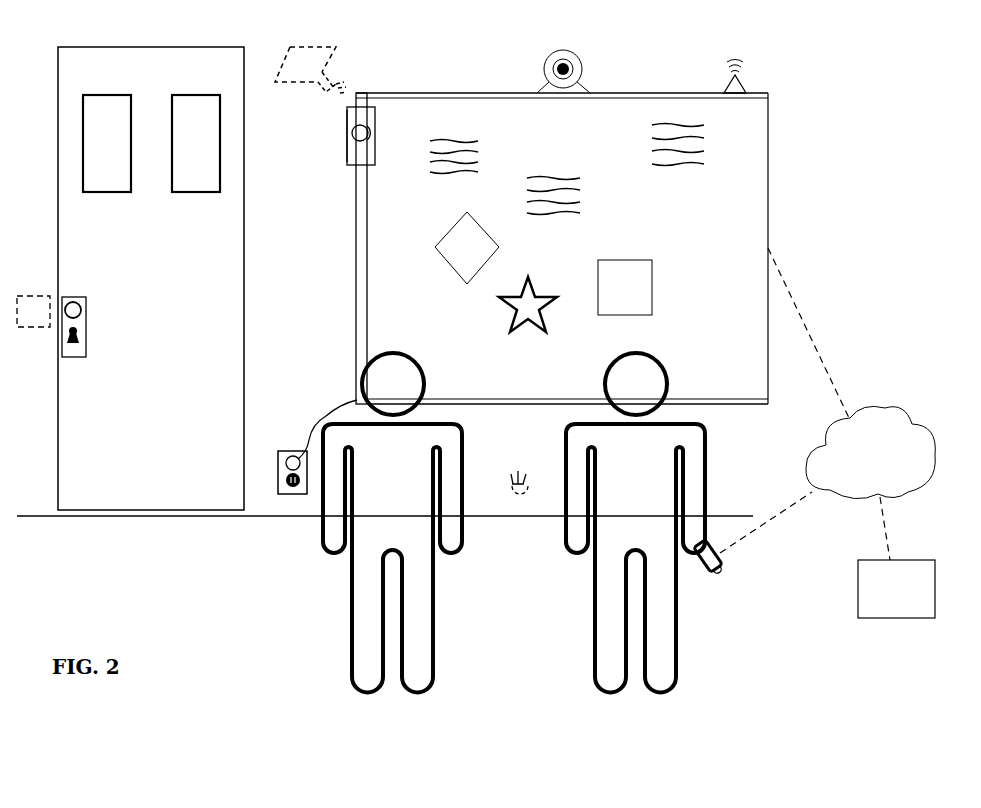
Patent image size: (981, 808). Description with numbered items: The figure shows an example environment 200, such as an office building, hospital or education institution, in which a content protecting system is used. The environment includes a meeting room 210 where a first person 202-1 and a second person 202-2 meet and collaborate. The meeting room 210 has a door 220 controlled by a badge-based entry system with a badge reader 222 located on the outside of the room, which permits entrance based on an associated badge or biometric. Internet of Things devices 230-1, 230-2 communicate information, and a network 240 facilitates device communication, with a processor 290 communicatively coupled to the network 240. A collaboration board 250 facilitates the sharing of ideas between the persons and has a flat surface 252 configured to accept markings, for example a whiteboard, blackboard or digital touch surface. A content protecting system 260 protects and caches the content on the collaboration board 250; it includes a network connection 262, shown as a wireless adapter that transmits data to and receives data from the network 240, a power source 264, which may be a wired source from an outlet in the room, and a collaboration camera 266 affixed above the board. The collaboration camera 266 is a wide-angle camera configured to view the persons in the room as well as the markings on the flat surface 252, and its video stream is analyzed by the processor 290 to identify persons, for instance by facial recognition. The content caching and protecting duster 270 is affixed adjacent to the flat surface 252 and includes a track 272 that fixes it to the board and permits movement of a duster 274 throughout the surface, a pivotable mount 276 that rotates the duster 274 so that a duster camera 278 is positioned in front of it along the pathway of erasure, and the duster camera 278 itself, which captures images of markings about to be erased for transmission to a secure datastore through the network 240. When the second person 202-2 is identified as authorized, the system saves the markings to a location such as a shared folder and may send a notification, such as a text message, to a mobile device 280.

The example environment 200 is at (863, 98).
The first person 202-1 is at (368, 495).
The second person 202-2 is at (614, 495).
The meeting room 210 is at (259, 502).
The door 220 is at (135, 292).
The badge reader 222 is at (31, 296).
The Internet of Things device 230-1 is at (517, 470).
The Internet of Things device 230-2 is at (352, 64).
The network 240 is at (856, 460).
The collaboration board 250 is at (802, 203).
The flat surface 252 is at (665, 215).
The content protecting system 260 is at (343, 259).
The network connection 262 is at (749, 82).
The power source 264 is at (318, 408).
The collaboration camera 266 is at (597, 67).
The content caching and protecting duster 270 is at (346, 174).
The track 272 is at (359, 250).
The duster 274 is at (347, 153).
The pivotable mount 276 is at (353, 130).
The duster camera 278 is at (372, 133).
The mobile device 280 is at (727, 578).
The processor 290 is at (883, 598).